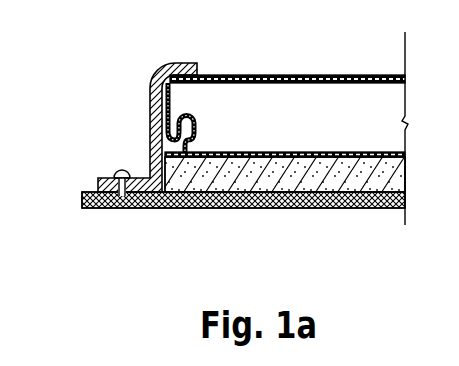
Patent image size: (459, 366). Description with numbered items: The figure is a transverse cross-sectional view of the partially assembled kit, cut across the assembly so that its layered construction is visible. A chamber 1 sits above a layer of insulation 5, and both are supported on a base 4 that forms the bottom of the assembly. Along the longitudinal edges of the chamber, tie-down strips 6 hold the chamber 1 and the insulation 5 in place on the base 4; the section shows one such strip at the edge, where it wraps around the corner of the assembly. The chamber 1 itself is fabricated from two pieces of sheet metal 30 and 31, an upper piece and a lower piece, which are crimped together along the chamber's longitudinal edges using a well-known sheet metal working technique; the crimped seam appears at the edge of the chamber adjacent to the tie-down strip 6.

The chamber 1 is at (349, 132).
The base 4 is at (213, 208).
The insulation 5 is at (387, 175).
The tie-down strip 6 is at (152, 118).
The sheet metal piece 30 is at (273, 75).
The sheet metal piece 31 is at (216, 152).